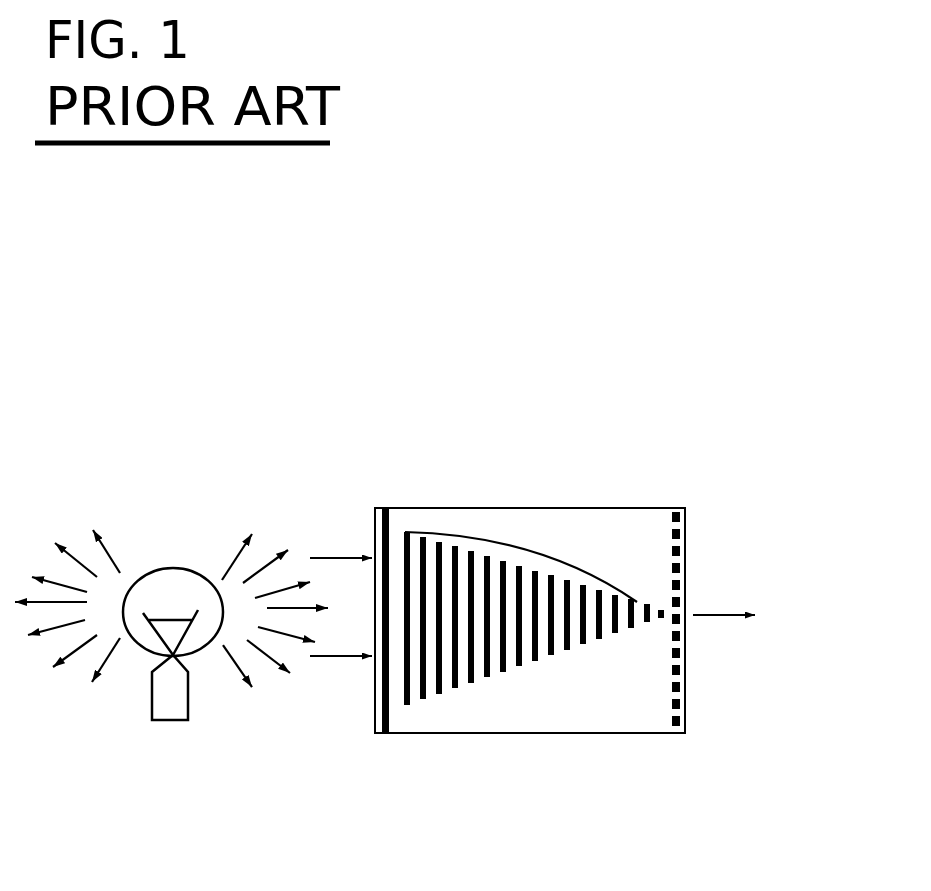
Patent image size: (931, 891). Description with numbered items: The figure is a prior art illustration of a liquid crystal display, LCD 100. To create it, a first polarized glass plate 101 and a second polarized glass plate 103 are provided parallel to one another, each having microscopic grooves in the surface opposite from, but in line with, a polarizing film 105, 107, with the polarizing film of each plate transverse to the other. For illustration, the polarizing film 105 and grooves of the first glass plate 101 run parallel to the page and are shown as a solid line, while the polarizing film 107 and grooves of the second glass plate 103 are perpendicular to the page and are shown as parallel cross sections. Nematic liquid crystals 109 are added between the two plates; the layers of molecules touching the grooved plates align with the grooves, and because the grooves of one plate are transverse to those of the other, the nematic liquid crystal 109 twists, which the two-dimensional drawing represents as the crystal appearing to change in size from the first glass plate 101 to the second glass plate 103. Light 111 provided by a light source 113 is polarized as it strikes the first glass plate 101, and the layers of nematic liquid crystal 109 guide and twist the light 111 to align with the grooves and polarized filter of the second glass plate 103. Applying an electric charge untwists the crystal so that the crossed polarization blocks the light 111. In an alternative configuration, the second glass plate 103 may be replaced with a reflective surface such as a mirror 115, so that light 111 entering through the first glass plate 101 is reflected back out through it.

The LCD 100 is at (695, 348).
The first polarized glass plate 101 is at (377, 508).
The second polarized glass plate 103 is at (685, 508).
The polarizing film 105 is at (380, 720).
The polarizing film 107 is at (677, 713).
The nematic liquid crystals 109 is at (530, 547).
The light 111 is at (248, 475).
The light source 113 is at (152, 690).
The mirror 115 is at (685, 735).